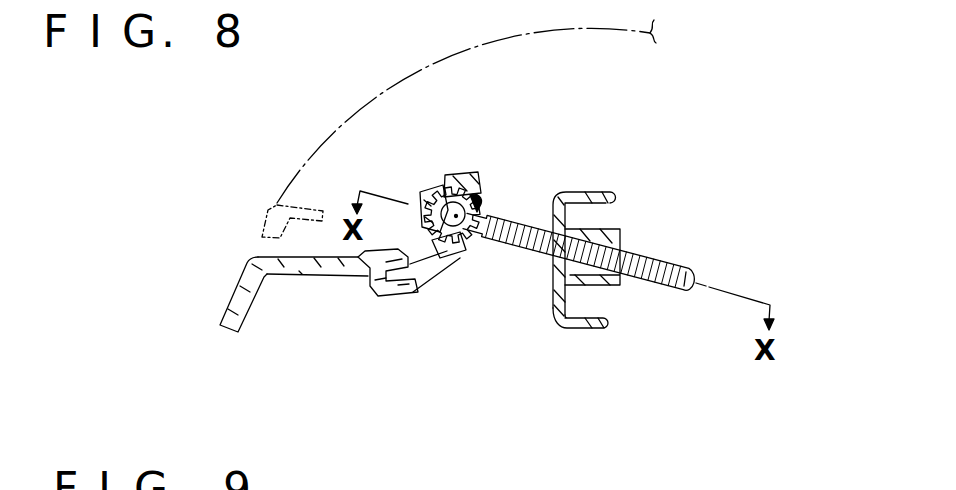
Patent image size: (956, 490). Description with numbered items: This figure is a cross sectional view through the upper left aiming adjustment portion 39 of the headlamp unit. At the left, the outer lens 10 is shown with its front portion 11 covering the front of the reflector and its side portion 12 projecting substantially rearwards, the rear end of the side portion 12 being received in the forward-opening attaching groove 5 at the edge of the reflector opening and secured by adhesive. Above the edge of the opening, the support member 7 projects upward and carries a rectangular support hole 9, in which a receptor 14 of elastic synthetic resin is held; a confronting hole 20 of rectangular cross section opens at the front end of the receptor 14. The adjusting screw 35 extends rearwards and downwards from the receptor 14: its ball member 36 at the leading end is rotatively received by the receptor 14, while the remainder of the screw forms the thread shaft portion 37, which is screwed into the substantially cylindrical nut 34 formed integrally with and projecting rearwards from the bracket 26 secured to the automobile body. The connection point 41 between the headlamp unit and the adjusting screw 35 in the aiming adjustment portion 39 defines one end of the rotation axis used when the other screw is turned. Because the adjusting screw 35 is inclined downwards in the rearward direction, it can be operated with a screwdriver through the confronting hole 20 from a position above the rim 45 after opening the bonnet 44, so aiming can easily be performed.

The attaching groove 5 is at (385, 298).
The support member 7 is at (470, 173).
The support hole 9 is at (484, 197).
The outer lens 10 is at (230, 305).
The front portion 11 is at (240, 281).
The side portion 12 is at (308, 258).
The receptor 14 is at (437, 174).
The confronting hole 20 is at (428, 196).
The bracket 26 is at (612, 194).
The nut 34 is at (615, 245).
The adjusting screw 35 is at (667, 274).
The ball member 36 is at (460, 242).
The thread shaft portion 37 is at (667, 274).
The aiming adjustment portion 39 is at (595, 128).
The connection point 41 is at (440, 258).
The bonnet 44 is at (367, 103).
The rim 45 is at (276, 206).